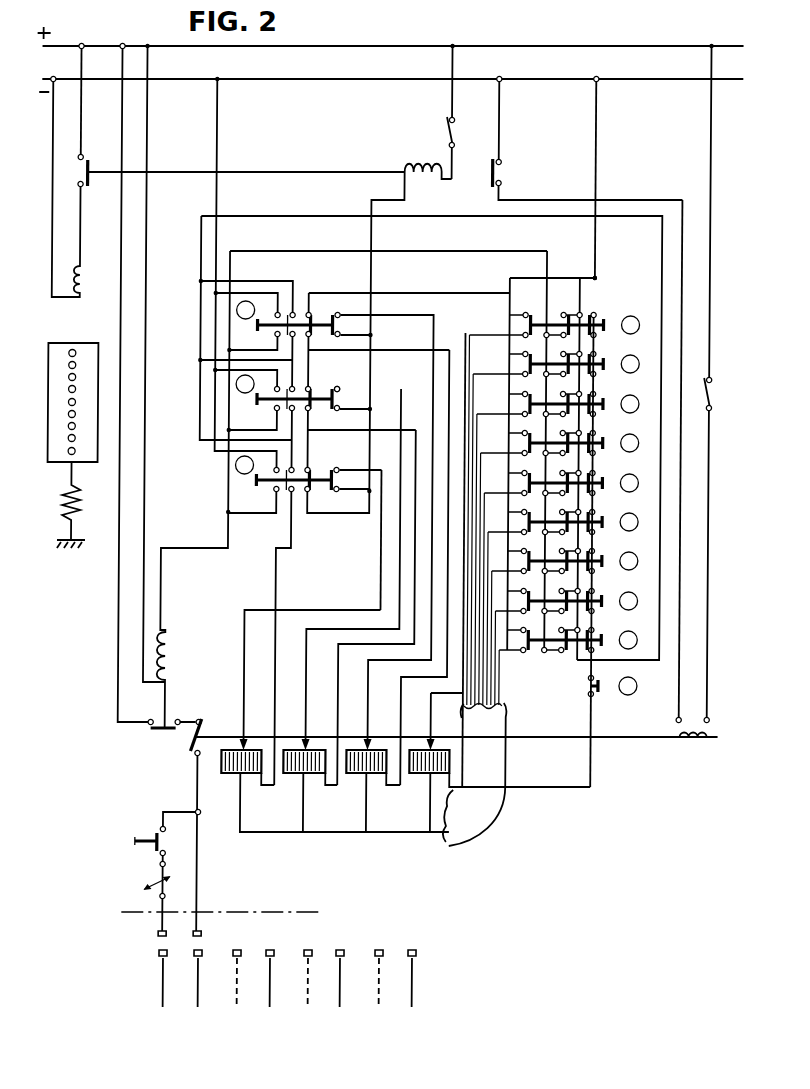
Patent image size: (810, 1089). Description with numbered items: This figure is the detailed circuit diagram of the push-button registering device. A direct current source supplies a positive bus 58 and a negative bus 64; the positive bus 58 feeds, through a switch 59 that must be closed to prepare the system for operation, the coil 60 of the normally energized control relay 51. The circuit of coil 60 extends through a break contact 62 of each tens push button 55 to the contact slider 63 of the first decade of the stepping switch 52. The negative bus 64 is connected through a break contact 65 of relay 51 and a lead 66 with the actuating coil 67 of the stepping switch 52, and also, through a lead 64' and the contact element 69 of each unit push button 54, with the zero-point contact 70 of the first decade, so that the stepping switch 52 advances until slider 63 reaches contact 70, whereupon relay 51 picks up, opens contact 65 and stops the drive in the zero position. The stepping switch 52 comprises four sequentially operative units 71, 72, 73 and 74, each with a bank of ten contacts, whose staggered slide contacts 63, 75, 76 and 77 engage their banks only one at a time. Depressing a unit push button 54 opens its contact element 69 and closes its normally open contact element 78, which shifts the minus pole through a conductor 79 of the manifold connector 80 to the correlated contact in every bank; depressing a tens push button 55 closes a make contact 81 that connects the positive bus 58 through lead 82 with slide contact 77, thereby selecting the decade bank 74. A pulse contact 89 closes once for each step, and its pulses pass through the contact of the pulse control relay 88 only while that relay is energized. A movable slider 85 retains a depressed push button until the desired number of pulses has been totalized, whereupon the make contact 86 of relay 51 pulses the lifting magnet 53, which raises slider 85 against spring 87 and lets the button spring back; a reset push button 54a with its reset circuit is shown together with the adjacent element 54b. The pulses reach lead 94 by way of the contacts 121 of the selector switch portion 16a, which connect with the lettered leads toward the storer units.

The positive bus 58 is at (69, 46).
The negative bus 64 is at (391, 74).
The lead 64' is at (612, 178).
The make contact of relay 51 86 is at (88, 165).
The control relay 51 is at (282, 172).
The lifting magnet 53 is at (82, 269).
The coil of control relay 60 is at (429, 170).
The switch 59 is at (451, 129).
The break contact of relay 51 65 is at (501, 176).
The lead 66 is at (683, 272).
The movable slider 85 is at (46, 402).
The spring 87 is at (57, 513).
The tens push buttons 55 is at (411, 431).
The make contact of tens push button 81 is at (341, 464).
The break contact of tens push button 62 is at (311, 496).
The lead 82 is at (380, 564).
The normally open contact element of unit push button 78 is at (553, 519).
The contact element of unit push button 69 is at (596, 316).
The unit push buttons 54 is at (601, 328).
The manifold connector 80 is at (467, 336).
The conductor of manifold connector 79 is at (488, 672).
The pulse control relay 88 is at (168, 712).
The pulse contact 89 is at (190, 745).
The slide contact 77 is at (243, 721).
The slide contact 76 is at (305, 721).
The slide contact 75 is at (369, 721).
The contact slider 63 is at (432, 721).
The zero-point contact 70 is at (452, 750).
The stepping switch unit 74 is at (241, 759).
The stepping switch unit 73 is at (307, 759).
The stepping switch unit 72 is at (370, 759).
The stepping switch unit 71 is at (497, 761).
The stepping switch 52 is at (338, 826).
The actuating coil of stepping switch 67 is at (683, 745).
The reset push button 54a is at (136, 841).
The switch 54b is at (146, 880).
The contacts of four-position switch 121 is at (195, 932).
The portion of four-position switch 16a is at (313, 936).
The lead 94 is at (302, 1055).